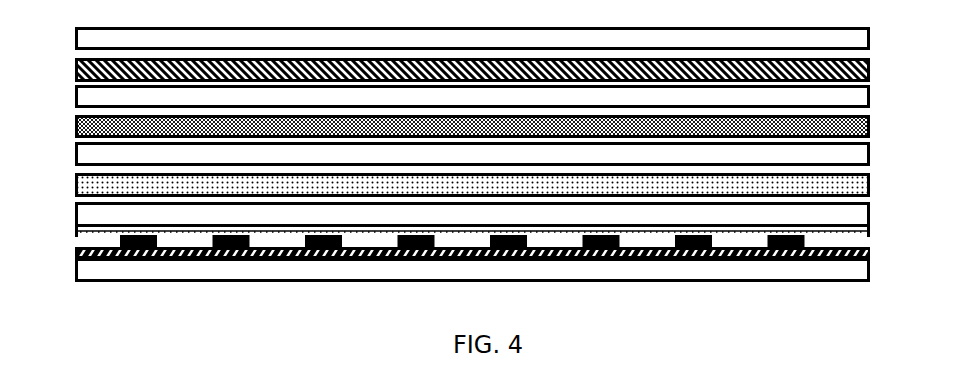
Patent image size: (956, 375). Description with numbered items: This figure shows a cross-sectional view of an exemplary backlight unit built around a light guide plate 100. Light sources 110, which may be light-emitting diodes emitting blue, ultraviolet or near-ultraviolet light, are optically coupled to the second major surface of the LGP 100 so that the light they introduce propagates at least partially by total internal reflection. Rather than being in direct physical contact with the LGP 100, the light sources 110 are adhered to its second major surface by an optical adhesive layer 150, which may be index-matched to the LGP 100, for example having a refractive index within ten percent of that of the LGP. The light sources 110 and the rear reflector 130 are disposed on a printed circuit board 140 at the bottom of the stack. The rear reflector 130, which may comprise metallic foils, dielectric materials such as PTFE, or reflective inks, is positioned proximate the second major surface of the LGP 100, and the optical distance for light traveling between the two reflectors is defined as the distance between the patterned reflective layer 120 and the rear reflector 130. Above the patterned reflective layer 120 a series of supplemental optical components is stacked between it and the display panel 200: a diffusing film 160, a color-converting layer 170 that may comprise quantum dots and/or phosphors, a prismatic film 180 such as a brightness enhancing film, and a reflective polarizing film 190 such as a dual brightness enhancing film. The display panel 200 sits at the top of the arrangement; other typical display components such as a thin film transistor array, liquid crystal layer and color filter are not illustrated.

The light guide plate 100 is at (75, 218).
The light source 110 is at (120, 244).
The patterned reflective layer 120 is at (870, 182).
The rear reflector 130 is at (870, 254).
The printed circuit board 140 is at (75, 270).
The optical adhesive layer 150 is at (870, 234).
The diffusing film 160 is at (75, 156).
The color-converting layer 170 is at (870, 128).
The prismatic film 180 is at (75, 98).
The reflective polarizing film 190 is at (870, 68).
The display panel 200 is at (75, 40).